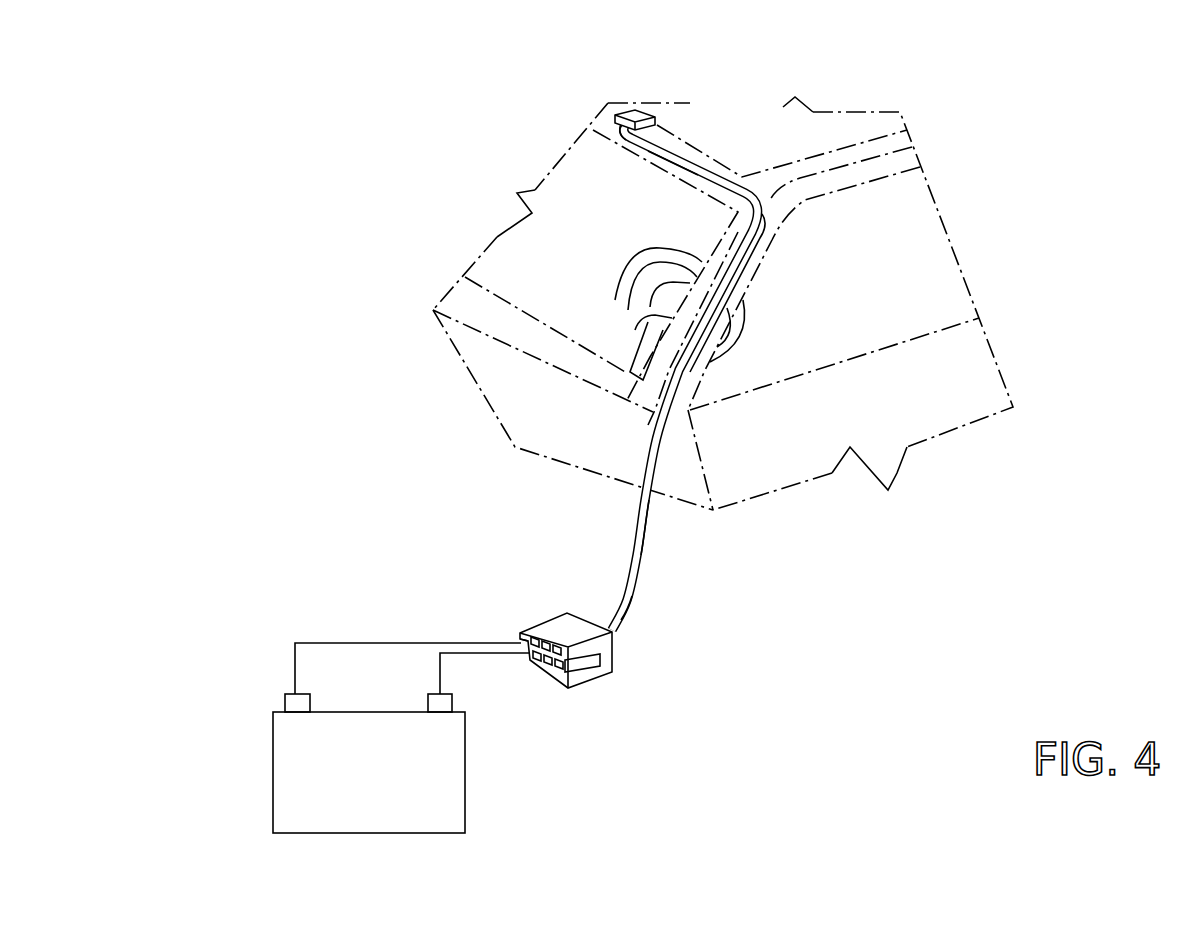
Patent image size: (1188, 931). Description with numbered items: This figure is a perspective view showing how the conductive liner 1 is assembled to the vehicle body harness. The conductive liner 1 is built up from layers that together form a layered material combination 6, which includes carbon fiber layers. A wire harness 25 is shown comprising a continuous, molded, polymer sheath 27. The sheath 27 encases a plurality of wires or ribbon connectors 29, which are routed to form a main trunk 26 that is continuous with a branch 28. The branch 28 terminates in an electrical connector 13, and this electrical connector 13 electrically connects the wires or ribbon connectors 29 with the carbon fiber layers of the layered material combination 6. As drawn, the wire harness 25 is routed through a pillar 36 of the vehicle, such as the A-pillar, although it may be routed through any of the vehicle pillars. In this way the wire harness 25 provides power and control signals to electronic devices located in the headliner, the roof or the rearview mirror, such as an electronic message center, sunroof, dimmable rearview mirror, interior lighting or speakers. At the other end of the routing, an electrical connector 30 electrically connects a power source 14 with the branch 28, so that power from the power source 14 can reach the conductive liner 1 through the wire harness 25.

The conductive liner 1 is at (742, 124).
The layered material combination 6 is at (741, 153).
The electrical connector 13 is at (638, 110).
The power source 14 is at (385, 791).
The wire harness 25 is at (629, 573).
The main trunk 26 is at (654, 396).
The sheath 27 is at (644, 548).
The branch 28 is at (637, 153).
The wires or ribbon connectors 29 is at (609, 129).
The electrical connector 30 is at (560, 633).
The pillar 36 is at (750, 292).